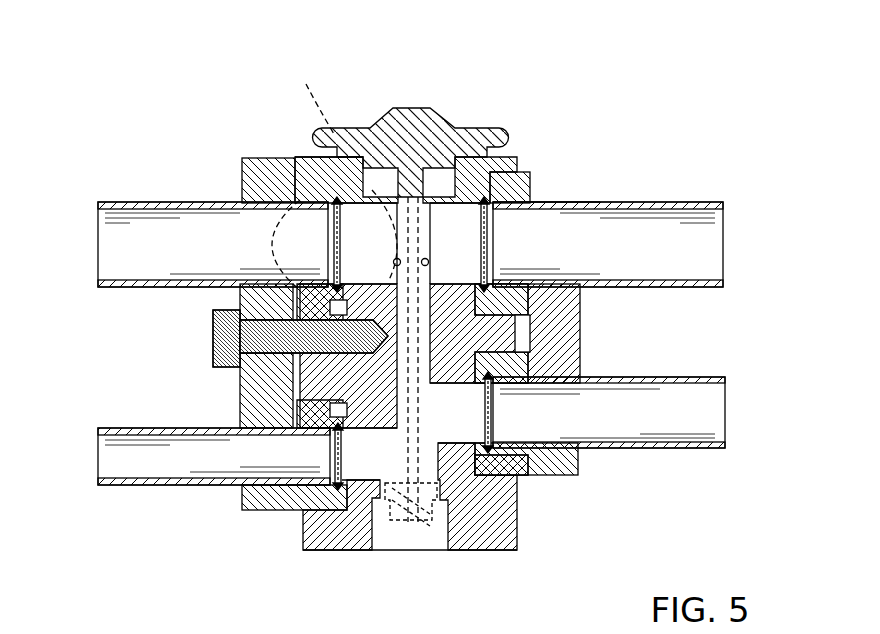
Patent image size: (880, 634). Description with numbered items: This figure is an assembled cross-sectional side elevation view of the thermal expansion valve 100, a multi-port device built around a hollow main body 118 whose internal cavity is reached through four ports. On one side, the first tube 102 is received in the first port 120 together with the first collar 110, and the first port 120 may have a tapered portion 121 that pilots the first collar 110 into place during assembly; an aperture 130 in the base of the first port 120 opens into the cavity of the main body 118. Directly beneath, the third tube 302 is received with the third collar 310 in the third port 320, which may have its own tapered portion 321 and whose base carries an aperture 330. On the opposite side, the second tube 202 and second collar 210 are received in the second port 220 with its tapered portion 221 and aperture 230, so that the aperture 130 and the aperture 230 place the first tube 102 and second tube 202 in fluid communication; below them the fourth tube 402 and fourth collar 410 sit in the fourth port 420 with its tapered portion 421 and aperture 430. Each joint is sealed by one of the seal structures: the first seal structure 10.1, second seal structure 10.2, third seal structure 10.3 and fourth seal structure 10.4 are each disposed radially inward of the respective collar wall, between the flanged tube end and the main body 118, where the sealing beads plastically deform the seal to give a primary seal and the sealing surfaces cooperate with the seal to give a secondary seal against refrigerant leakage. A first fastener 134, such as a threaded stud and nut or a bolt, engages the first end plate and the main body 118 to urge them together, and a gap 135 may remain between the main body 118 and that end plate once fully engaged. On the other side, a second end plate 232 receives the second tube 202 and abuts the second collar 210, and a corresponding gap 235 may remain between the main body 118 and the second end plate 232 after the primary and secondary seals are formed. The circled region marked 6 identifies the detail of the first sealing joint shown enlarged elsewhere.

The thermal expansion valve 100 is at (476, 84).
The detail section 6 is at (334, 170).
The gap 135 is at (299, 152).
The first collar 110 is at (295, 160).
The first port 120 is at (242, 162).
The first tube 102 is at (113, 201).
The second collar 210 is at (534, 170).
The second port 220 is at (528, 190).
The second end plate 232 is at (572, 202).
The second tube 202 is at (697, 200).
The aperture 130 is at (360, 205).
The aperture 230 is at (452, 205).
The first seal structure 10.1 is at (341, 268).
The second seal structure 10.2 is at (489, 226).
The third seal structure 10.3 is at (336, 452).
The fourth seal structure 10.4 is at (493, 428).
The tapered portion 121 is at (262, 295).
The first fastener 134 is at (214, 328).
The third tube 302 is at (117, 427).
The tapered portion 321 is at (262, 398).
The tapered portion 221 is at (535, 291).
The gap 235 is at (530, 338).
The tapered portion 421 is at (537, 333).
The fourth tube 402 is at (691, 376).
The aperture 430 is at (453, 385).
The aperture 330 is at (372, 430).
The third port 320 is at (300, 497).
The third collar 310 is at (300, 513).
The fourth port 420 is at (522, 477).
The fourth collar 410 is at (522, 479).
The hollow main body 118 is at (478, 552).